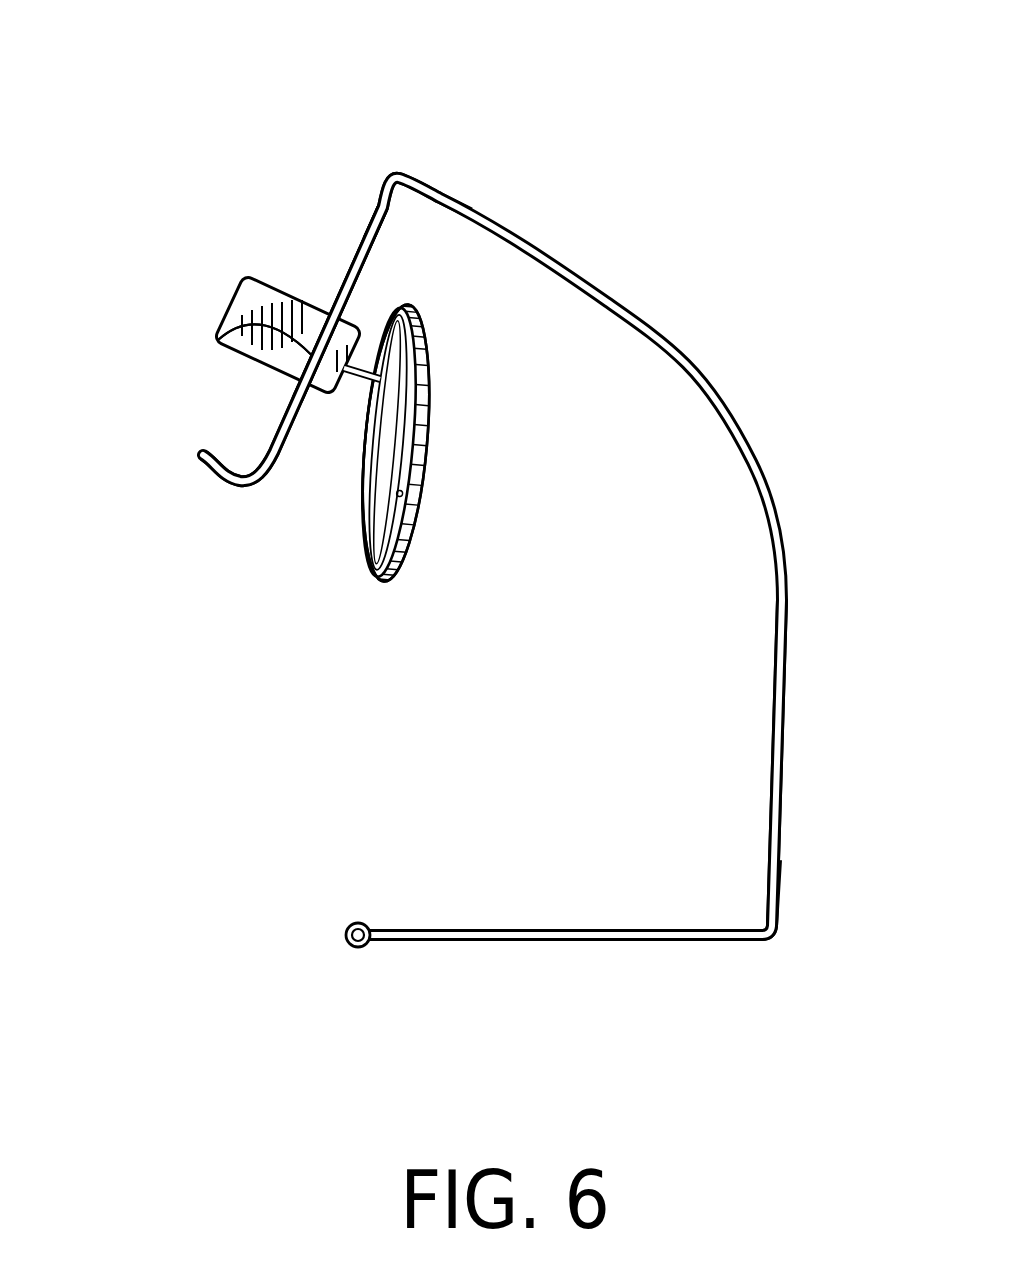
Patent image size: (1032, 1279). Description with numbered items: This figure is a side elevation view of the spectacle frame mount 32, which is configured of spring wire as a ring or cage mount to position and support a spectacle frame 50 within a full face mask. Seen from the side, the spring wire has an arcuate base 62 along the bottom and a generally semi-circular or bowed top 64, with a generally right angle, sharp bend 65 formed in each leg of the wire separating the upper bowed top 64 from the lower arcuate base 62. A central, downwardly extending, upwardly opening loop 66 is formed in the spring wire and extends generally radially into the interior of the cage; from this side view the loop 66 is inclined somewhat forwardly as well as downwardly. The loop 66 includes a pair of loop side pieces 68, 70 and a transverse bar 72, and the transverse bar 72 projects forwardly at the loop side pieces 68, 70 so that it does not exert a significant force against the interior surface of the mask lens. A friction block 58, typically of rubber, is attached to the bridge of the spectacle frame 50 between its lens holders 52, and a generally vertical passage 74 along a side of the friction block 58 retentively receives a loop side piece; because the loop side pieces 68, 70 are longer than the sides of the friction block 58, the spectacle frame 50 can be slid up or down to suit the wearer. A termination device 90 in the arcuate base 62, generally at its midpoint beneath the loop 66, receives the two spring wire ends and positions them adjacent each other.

The spectacle frame mount 32 is at (668, 240).
The spectacle frame 50 is at (455, 534).
The lens holders 52 is at (422, 453).
The friction block 58 is at (248, 282).
The arcuate base 62 is at (585, 942).
The bowed top 64 is at (812, 723).
The sharp bend 65 is at (772, 938).
The loop 66 is at (397, 126).
The loop side piece 68 is at (376, 269).
The loop side piece 70 is at (340, 303).
The transverse bar 72 is at (197, 452).
The passage 74 is at (216, 341).
The termination device 90 is at (400, 878).